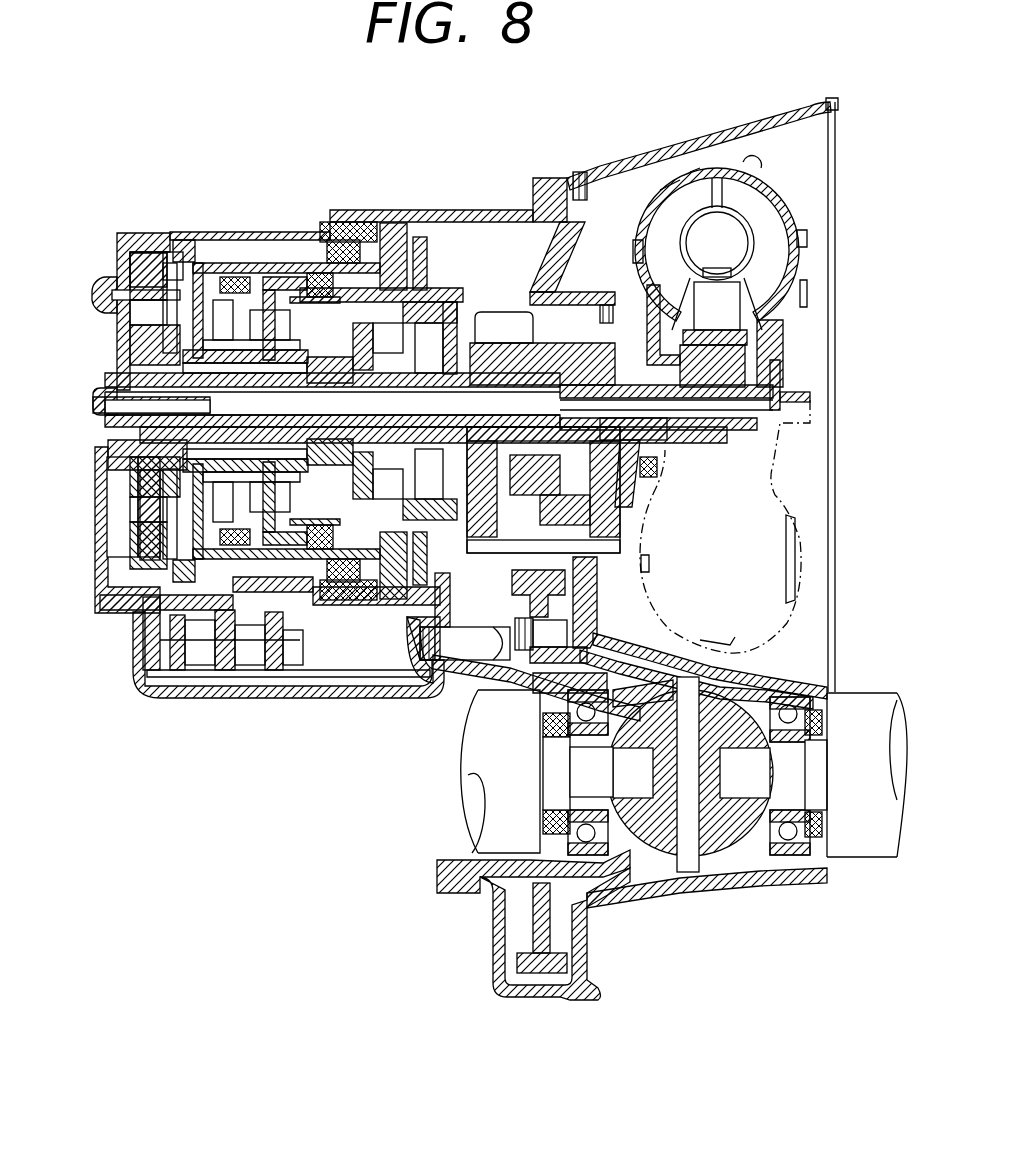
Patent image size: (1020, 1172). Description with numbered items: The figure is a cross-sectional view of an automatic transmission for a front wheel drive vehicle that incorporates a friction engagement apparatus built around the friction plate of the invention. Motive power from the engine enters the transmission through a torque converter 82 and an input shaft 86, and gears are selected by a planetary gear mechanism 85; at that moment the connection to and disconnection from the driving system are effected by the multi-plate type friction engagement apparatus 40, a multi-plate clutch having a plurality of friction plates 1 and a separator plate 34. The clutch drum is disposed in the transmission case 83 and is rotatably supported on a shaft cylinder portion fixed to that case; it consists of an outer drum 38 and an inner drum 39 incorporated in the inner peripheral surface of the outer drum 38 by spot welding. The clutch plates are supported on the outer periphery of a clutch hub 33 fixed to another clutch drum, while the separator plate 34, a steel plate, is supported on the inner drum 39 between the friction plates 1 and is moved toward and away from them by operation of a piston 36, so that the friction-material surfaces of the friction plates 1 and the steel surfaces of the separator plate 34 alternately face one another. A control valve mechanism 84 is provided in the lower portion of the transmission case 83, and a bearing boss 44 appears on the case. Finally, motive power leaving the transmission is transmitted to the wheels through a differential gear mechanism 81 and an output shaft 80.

The friction plate 1 is at (165, 330).
The clutch hub 33 is at (250, 280).
The separator plate 34 is at (260, 290).
The piston 36 is at (130, 320).
The outer drum 38 is at (225, 265).
The inner drum 39 is at (252, 305).
The multi-plate type friction engagement apparatus 40 is at (190, 255).
The bearing boss 44 is at (118, 432).
The output shaft 80 is at (478, 806).
The differential gear mechanism 81 is at (662, 876).
The torque converter 82 is at (797, 209).
The transmission case 83 is at (125, 237).
The control valve mechanism 84 is at (272, 710).
The planetary gear mechanism 85 is at (468, 282).
The input shaft 86 is at (805, 410).